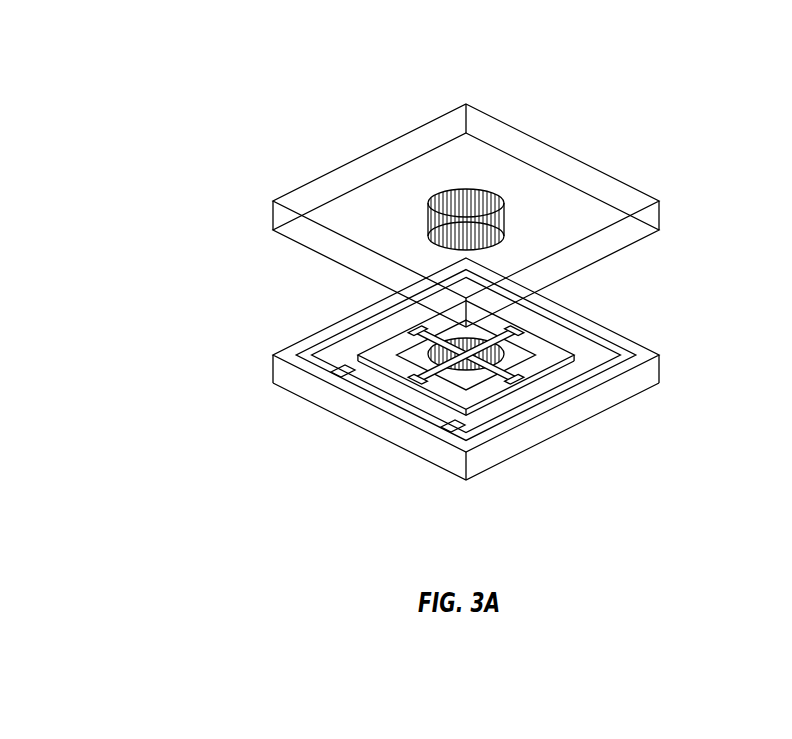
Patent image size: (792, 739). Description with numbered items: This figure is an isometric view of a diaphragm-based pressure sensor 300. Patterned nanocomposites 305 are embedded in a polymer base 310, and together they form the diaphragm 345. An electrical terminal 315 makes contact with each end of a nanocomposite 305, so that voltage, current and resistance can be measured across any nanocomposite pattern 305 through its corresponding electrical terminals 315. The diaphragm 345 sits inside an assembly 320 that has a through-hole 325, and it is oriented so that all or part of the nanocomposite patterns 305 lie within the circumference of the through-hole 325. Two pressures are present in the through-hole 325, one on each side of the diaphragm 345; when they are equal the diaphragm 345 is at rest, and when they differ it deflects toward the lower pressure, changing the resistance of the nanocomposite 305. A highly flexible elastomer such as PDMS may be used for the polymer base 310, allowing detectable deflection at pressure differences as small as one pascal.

The diaphragm-based pressure sensor 300 is at (262, 302).
The patterned nanocomposite 305 is at (452, 367).
The polymer base 310 is at (527, 350).
The electrical terminal 315 is at (341, 378).
The assembly 320 is at (357, 155).
The through-hole 325 is at (485, 183).
The diaphragm 345 is at (575, 347).